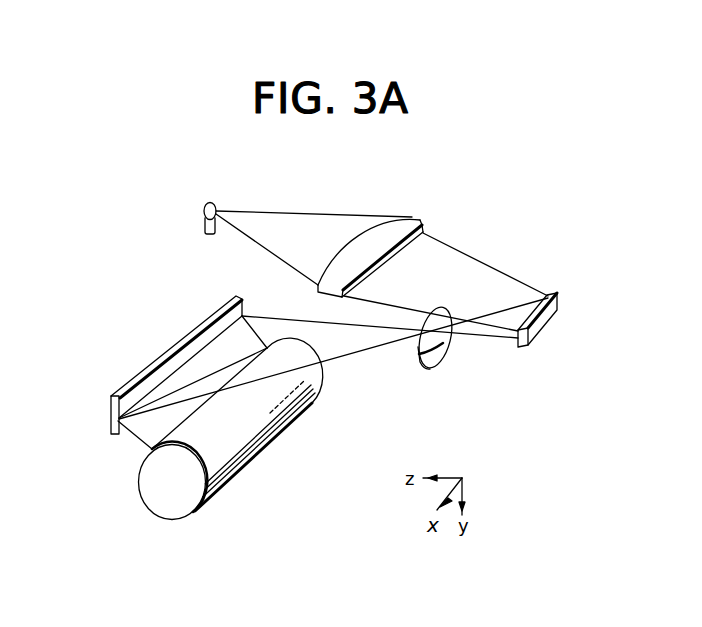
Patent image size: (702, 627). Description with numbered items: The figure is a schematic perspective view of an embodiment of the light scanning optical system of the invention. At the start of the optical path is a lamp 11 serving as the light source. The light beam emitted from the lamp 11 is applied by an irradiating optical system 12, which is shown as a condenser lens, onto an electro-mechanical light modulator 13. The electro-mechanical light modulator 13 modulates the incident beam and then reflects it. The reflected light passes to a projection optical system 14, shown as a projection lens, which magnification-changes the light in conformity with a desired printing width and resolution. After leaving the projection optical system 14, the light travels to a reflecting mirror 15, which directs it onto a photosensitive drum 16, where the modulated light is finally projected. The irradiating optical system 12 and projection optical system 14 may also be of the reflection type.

The lamp 11 is at (205, 210).
The irradiating optical system 12 is at (392, 233).
The electro-mechanical light modulator 13 is at (556, 321).
The projection optical system 14 is at (438, 350).
The reflecting mirror 15 is at (111, 416).
The photosensitive drum 16 is at (254, 438).